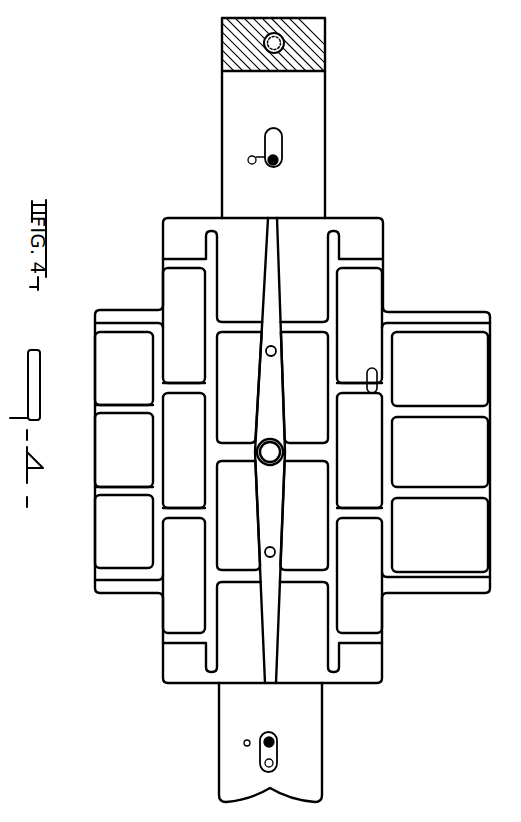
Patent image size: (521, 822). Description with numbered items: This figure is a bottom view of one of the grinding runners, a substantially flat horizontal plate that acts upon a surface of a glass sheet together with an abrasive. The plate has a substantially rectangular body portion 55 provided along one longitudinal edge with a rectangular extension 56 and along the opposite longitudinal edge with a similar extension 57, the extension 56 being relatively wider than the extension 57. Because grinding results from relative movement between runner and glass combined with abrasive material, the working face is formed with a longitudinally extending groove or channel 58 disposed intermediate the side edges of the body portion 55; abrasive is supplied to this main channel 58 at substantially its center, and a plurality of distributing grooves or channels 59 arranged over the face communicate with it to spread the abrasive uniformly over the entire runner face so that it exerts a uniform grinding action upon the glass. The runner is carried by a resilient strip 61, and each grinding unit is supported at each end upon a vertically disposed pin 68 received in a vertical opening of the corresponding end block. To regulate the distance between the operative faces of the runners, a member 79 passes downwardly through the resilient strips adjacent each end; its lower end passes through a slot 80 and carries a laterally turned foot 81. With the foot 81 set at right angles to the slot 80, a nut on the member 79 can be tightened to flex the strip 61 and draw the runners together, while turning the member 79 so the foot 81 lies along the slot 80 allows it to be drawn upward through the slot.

The body portion 55 is at (367, 597).
The rectangular extension 56 is at (470, 450).
The extension 57 is at (113, 355).
The groove or channel 58 is at (272, 480).
The distributing grooves or channels 59 is at (156, 478).
The resilient strip 61 is at (307, 695).
The vertical pin 68 is at (282, 58).
The member 79 is at (280, 165).
The slot 80 is at (270, 135).
The foot 81 is at (252, 165).